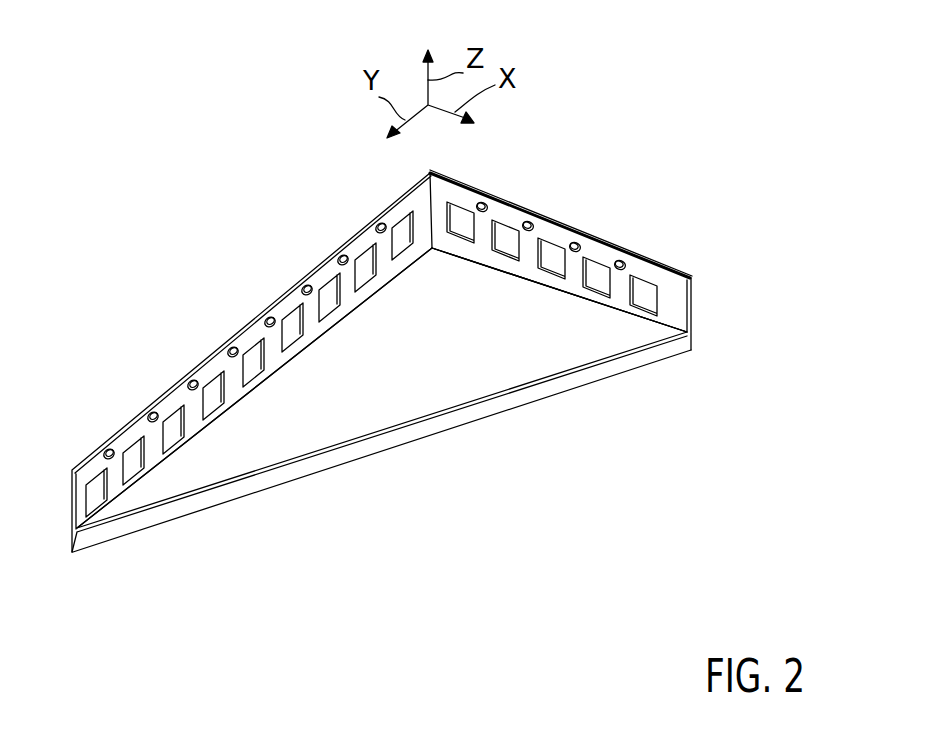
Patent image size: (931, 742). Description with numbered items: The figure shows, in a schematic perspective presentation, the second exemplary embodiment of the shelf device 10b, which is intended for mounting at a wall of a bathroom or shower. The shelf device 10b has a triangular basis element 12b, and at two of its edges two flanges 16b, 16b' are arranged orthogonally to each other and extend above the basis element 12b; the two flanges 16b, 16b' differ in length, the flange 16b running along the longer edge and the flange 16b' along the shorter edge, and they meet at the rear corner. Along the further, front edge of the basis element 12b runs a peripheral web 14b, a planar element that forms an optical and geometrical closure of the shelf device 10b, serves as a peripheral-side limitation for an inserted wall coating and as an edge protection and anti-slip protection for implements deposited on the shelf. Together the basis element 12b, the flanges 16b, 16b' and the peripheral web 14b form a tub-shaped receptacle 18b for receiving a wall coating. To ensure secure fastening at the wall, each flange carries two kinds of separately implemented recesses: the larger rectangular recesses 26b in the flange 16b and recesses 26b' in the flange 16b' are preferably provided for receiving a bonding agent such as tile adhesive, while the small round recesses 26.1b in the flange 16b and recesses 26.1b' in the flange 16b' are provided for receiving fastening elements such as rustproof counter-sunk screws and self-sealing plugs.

The shelf device 10b is at (220, 213).
The basis element 12b is at (378, 382).
The peripheral web 14b is at (530, 393).
The flange 16b is at (252, 362).
The flange 16b' is at (581, 231).
The tub-shaped receptacle 18b is at (559, 335).
The recesses 26b is at (249, 364).
The recesses 26b' is at (589, 251).
The recesses 26.1b is at (245, 319).
The recesses 26.1b' is at (550, 192).